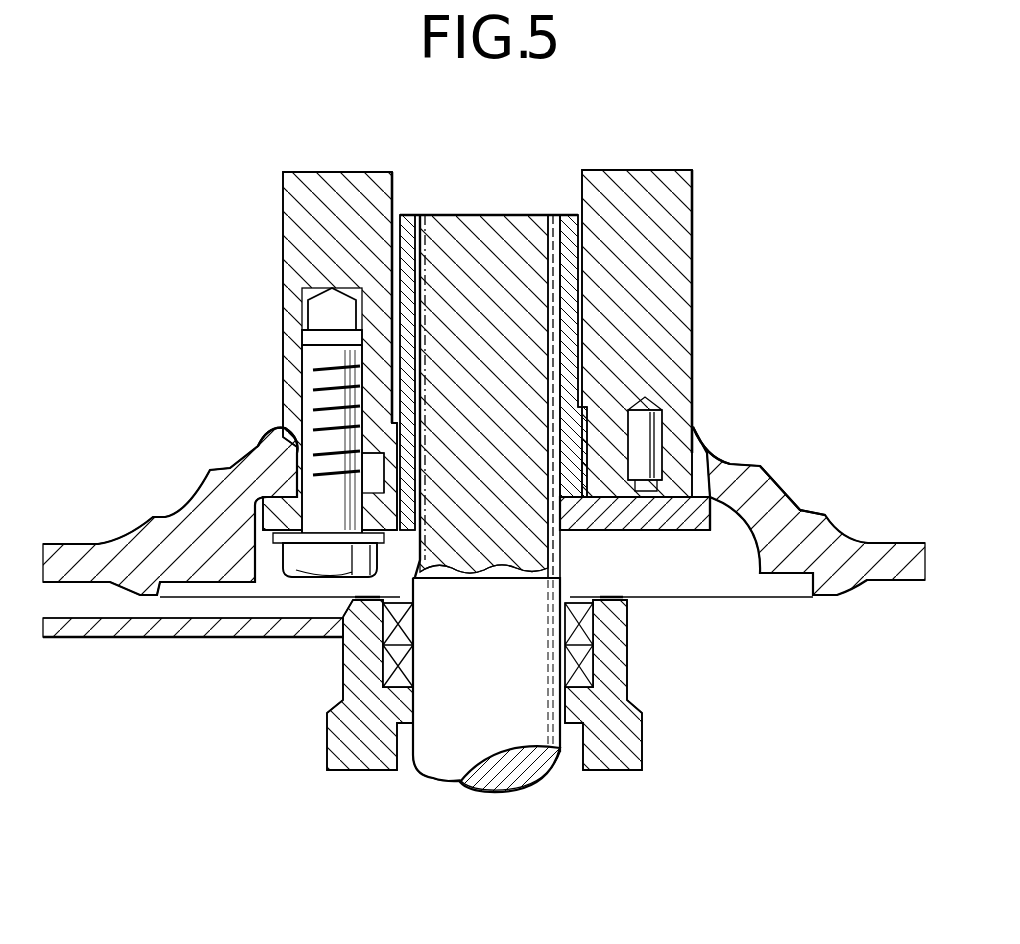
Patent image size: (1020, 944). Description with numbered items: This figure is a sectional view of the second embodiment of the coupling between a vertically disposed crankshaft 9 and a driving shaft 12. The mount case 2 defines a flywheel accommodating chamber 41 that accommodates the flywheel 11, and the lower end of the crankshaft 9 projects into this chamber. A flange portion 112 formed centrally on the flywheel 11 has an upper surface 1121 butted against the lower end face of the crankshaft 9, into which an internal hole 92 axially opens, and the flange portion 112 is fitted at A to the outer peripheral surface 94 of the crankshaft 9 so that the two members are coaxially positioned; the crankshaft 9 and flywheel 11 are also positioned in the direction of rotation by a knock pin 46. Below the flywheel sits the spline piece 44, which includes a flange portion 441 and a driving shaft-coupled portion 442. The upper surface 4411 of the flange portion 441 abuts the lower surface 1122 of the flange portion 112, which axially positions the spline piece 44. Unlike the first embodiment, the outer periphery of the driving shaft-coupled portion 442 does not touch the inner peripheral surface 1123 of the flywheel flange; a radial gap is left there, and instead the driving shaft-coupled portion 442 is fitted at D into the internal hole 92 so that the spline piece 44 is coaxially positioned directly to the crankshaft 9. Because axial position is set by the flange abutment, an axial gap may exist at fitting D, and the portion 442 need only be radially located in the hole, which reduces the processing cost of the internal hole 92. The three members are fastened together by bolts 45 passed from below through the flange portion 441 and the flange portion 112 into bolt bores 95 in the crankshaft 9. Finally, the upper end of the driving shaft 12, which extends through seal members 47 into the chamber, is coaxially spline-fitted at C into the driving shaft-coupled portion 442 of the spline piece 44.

The mount case 2 is at (192, 642).
The crankshaft 9 is at (706, 278).
The internal hole 92 is at (393, 192).
The outer peripheral surface 94 is at (694, 330).
The bolt bores 95 is at (303, 372).
The flywheel 11 is at (811, 501).
The flange portion 112 is at (556, 528).
The upper surface 1121 is at (655, 425).
The lower surface 1122 is at (722, 505).
The inner peripheral surface 1123 is at (387, 472).
The driving shaft 12 is at (443, 784).
The flywheel accommodating chamber 41 is at (218, 262).
The spline piece 44 is at (650, 538).
The flange portion 441 is at (594, 512).
The driving shaft-coupled portion 442 is at (575, 300).
The upper surface 4411 is at (684, 532).
The bolts 45 is at (320, 565).
The knock pin 46 is at (662, 400).
The seal members 47 is at (598, 668).
The fitting point A is at (277, 432).
The spline-fitting point C is at (428, 253).
The fitting point D is at (599, 431).